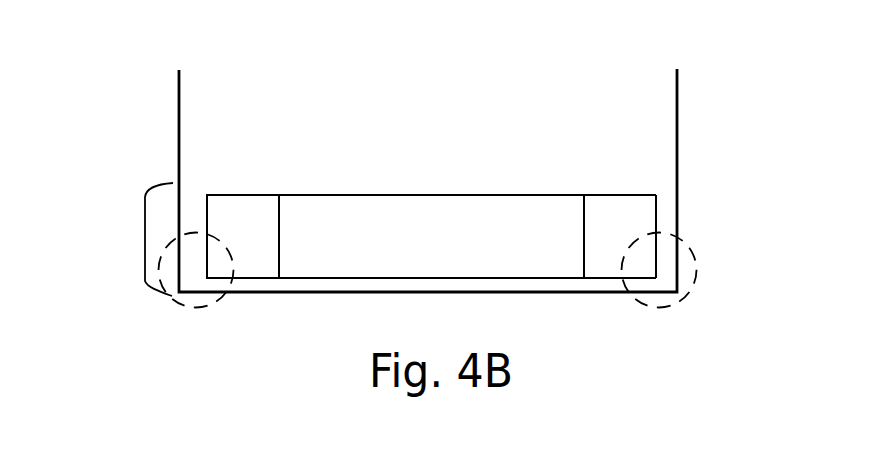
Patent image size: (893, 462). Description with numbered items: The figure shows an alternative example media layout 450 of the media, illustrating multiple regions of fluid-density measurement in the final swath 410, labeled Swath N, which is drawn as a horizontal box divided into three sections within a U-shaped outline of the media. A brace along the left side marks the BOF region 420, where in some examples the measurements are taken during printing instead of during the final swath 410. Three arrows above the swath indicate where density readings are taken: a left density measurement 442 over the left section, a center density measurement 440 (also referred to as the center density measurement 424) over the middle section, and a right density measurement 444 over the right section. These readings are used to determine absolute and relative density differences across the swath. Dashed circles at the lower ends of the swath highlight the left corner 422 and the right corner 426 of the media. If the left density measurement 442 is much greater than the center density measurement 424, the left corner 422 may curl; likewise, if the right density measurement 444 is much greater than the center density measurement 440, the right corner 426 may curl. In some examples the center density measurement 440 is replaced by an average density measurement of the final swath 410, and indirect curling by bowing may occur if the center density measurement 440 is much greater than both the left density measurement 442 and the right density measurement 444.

The alternative example media layout 450 is at (724, 75).
The final swath 410 is at (657, 213).
The center density measurement 424 is at (396, 195).
The left density measurement 442 is at (229, 141).
The center density measurement 440 is at (368, 143).
The right density measurement 444 is at (605, 140).
The BOF region 420 is at (143, 237).
The left corner 422 is at (172, 296).
The right corner 426 is at (698, 269).